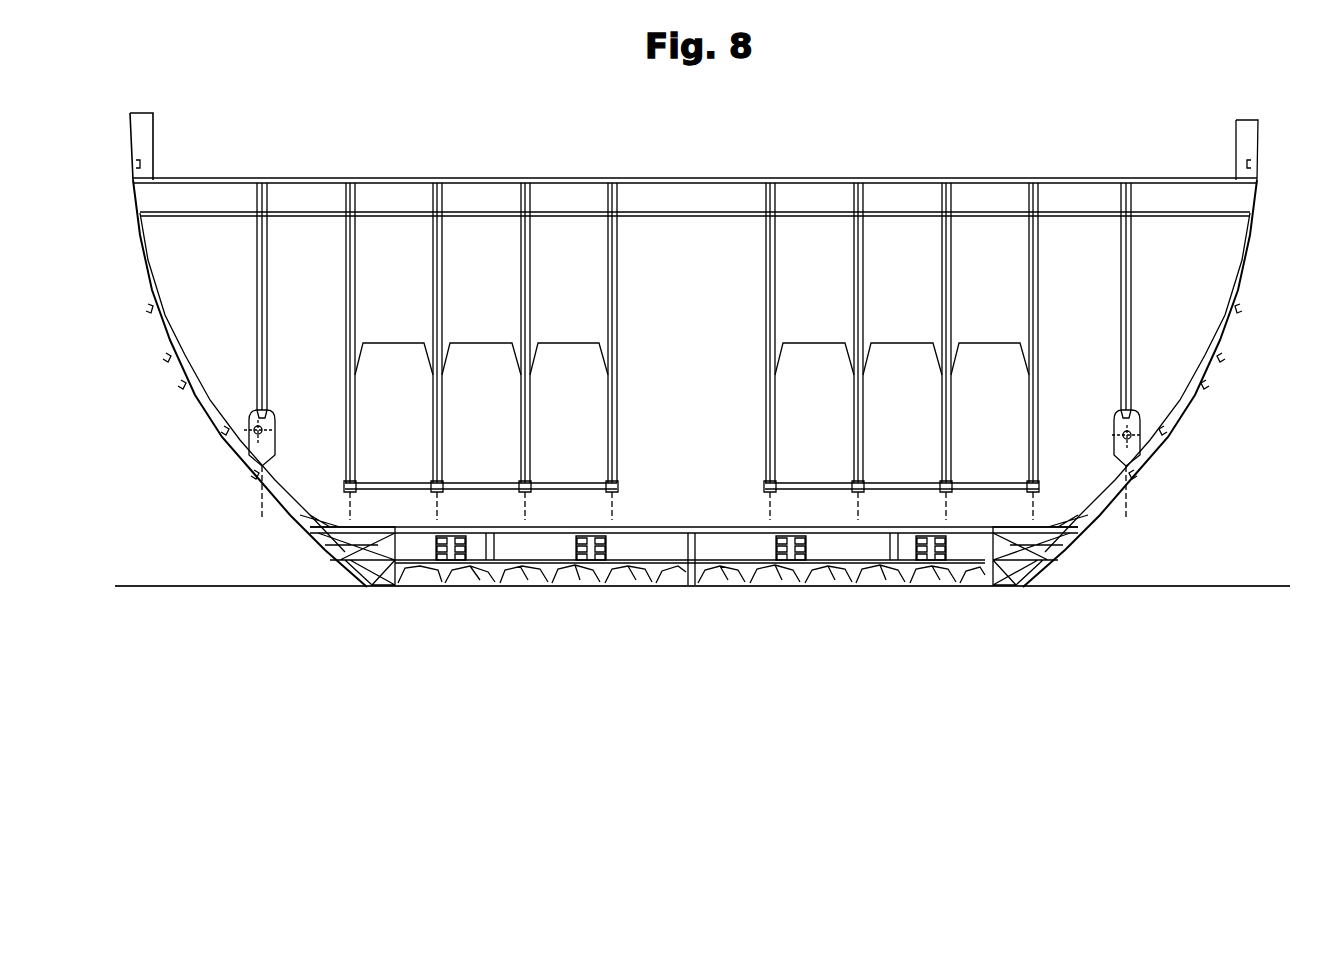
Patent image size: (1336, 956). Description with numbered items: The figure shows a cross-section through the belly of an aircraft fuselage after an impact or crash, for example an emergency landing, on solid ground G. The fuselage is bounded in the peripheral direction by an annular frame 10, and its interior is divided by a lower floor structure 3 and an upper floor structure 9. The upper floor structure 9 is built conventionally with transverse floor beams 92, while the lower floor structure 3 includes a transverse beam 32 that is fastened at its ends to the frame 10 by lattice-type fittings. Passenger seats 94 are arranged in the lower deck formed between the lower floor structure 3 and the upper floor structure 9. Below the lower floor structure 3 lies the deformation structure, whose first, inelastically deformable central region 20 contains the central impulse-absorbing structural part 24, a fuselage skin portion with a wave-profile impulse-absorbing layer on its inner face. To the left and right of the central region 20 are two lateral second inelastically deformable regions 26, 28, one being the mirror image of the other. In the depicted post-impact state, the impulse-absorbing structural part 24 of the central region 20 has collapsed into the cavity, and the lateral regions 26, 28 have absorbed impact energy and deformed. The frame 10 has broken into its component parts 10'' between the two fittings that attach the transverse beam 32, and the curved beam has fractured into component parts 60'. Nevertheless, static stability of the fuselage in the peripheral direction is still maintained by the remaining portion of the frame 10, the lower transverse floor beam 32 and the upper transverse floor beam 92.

The upper floor structure 9 is at (730, 176).
The transverse floor beam 92 is at (672, 195).
The passenger seat 94 is at (785, 402).
The frame 10 is at (693, 333).
The lower floor structure 3 is at (706, 525).
The transverse beam 32 is at (672, 545).
The impulse-absorbing structural part 24 is at (695, 592).
The second inelastically deformable region 26 is at (375, 592).
The second inelastically deformable region 28 is at (997, 594).
The component part of curved beam 60' is at (542, 608).
The component part of frame 10'' is at (841, 608).
The solid ground G is at (1168, 586).
The first inelastically deformable central region 20 is at (522, 624).